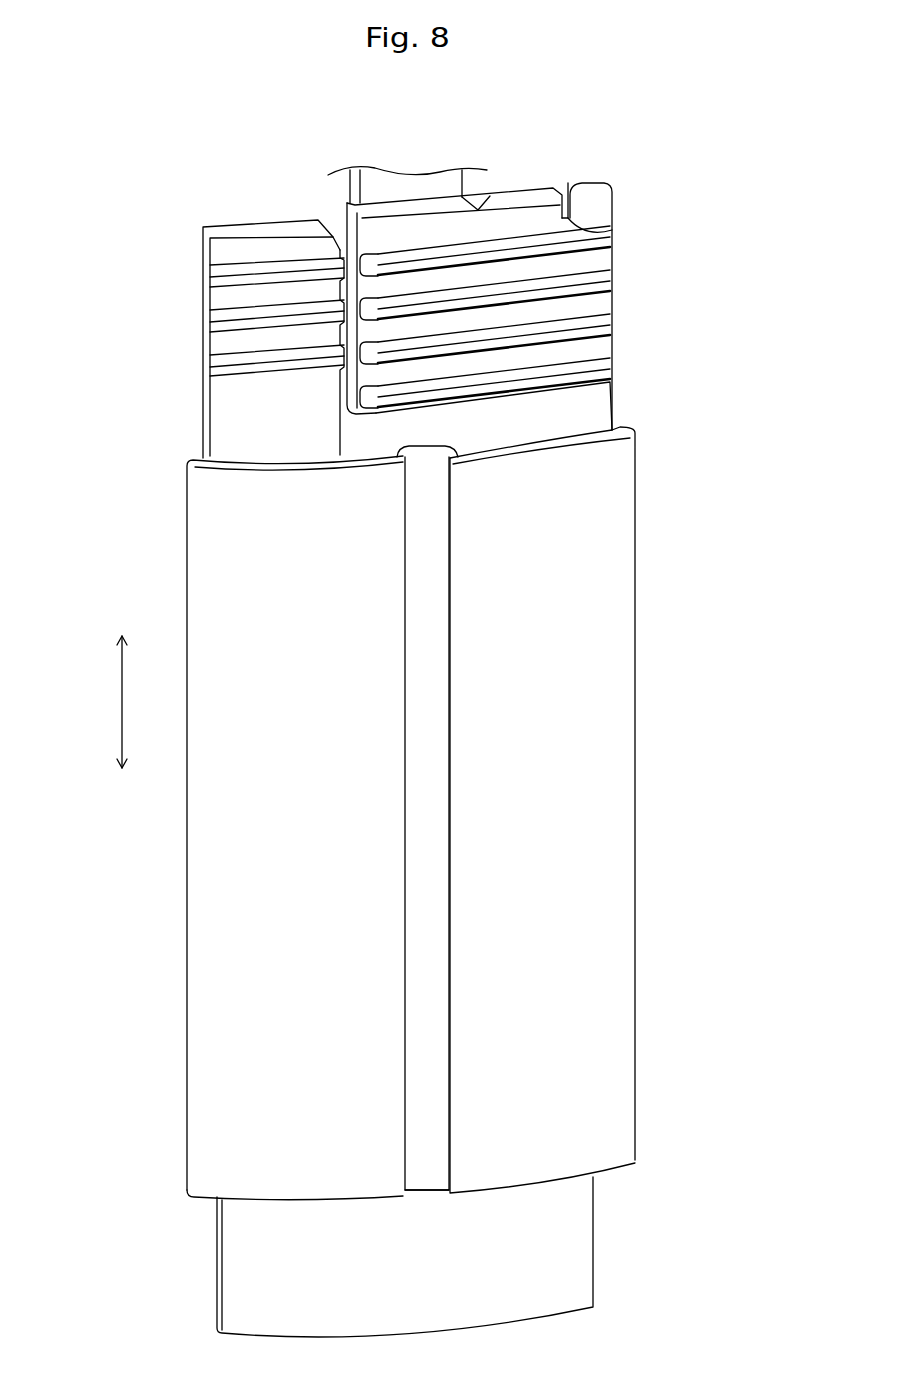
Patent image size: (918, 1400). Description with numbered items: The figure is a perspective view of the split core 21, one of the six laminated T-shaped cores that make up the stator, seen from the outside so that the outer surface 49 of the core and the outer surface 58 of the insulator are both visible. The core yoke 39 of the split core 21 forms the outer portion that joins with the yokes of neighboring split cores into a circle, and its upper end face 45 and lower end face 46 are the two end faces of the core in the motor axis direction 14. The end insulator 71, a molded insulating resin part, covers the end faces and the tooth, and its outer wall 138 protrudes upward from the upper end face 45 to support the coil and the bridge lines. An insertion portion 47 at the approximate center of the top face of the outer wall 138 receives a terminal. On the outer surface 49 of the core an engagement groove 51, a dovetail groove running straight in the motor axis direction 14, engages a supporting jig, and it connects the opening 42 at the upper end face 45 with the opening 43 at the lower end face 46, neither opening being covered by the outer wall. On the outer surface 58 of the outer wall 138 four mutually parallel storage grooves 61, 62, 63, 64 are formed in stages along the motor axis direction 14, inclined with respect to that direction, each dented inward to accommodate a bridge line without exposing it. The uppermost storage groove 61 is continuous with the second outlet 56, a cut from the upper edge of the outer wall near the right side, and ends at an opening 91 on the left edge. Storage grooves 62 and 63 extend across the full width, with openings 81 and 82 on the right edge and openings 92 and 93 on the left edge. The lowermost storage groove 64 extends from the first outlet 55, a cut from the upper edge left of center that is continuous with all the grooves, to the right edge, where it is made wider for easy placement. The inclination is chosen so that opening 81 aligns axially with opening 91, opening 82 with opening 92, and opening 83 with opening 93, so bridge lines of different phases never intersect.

The motor axis direction 14 is at (122, 703).
The split core 21 is at (467, 813).
The core yoke 39 is at (630, 190).
The opening 42 is at (416, 449).
The opening 43 is at (427, 1202).
The upper end face 45 is at (566, 424).
The lower end face 46 is at (556, 1185).
The insertion portion 47 is at (470, 201).
The outer surface 49 is at (551, 637).
The engagement groove 51 is at (428, 814).
The first outlet 55 is at (427, 274).
The second outlet 56 is at (566, 184).
The outer surface 58 is at (315, 437).
The storage groove 61 is at (233, 282).
The storage groove 62 is at (233, 326).
The storage groove 63 is at (233, 370).
The storage groove 64 is at (583, 358).
The end insulator 71 is at (230, 339).
The opening 81 is at (626, 250).
The opening 82 is at (626, 295).
The opening 83 is at (626, 343).
The opening 91 is at (200, 270).
The opening 92 is at (200, 313).
The opening 93 is at (200, 358).
The outer wall 138 is at (272, 412).